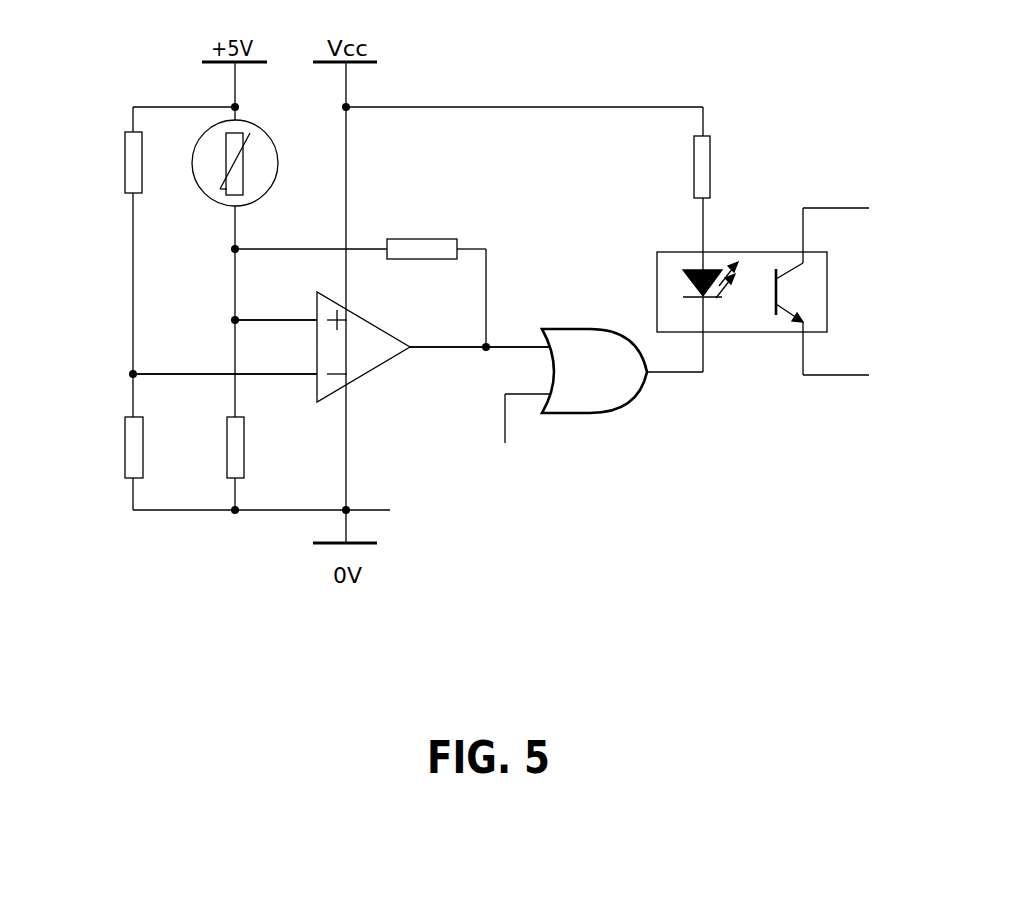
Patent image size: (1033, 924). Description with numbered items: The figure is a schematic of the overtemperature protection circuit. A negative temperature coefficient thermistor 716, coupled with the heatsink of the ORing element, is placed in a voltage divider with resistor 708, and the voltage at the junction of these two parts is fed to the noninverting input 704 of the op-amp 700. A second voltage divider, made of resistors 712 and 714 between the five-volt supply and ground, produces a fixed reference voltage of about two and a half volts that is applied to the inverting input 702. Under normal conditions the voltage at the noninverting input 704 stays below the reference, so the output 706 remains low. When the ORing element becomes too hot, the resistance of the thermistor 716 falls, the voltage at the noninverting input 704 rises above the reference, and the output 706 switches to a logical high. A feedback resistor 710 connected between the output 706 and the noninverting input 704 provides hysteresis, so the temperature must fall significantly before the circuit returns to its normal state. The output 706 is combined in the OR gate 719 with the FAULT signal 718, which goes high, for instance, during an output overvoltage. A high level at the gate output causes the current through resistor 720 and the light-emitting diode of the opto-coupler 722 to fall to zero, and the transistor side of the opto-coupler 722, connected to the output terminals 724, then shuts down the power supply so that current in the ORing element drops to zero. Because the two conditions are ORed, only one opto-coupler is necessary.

The op-amp 700 is at (378, 371).
The inverting input 702 is at (277, 377).
The noninverting input 704 is at (298, 320).
The output 706 is at (457, 350).
The resistor 708 is at (244, 468).
The resistor 710 is at (432, 238).
The resistor 712 is at (125, 433).
The resistor 714 is at (125, 163).
The negative temperature coefficient thermistor 716 is at (273, 141).
The FAULT signal 718 is at (512, 423).
The gate 719 is at (580, 327).
The resistor 720 is at (713, 147).
The opto-coupler 722 is at (665, 250).
The opto-coupler output terminals 724 is at (852, 207).